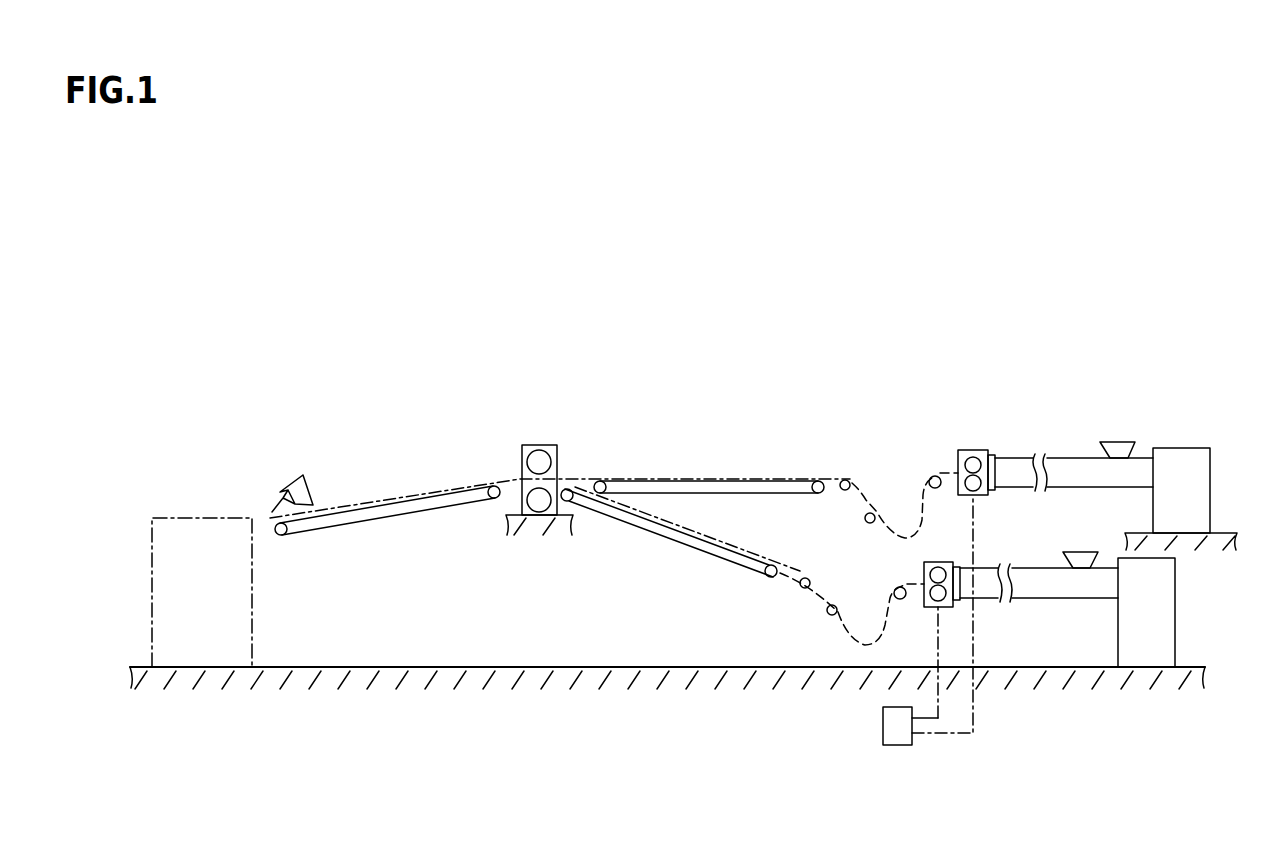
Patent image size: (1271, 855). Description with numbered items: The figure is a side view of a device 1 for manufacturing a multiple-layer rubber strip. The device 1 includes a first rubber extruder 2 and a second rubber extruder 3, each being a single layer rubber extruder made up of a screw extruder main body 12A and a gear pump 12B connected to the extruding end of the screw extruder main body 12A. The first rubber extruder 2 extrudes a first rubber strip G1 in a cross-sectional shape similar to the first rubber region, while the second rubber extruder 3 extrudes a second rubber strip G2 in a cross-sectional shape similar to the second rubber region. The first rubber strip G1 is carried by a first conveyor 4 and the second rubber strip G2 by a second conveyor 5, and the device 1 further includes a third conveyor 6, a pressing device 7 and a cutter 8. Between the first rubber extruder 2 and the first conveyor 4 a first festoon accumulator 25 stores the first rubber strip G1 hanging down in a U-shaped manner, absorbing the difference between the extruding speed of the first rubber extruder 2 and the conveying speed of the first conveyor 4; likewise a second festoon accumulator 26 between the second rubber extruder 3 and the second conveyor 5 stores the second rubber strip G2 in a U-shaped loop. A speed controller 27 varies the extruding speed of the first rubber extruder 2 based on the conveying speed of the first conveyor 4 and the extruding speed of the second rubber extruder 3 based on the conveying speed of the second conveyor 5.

The device for manufacturing a multiple-layer rubber strip 1 is at (801, 387).
The first rubber extruder 2 is at (1086, 610).
The second rubber extruder 3 is at (1117, 370).
The first conveyor 4 is at (685, 547).
The second conveyor 5 is at (667, 493).
The third conveyor 6 is at (377, 517).
The pressing device 7 is at (570, 448).
The cutter 8 is at (324, 457).
The screw extruder main body 12A is at (1073, 458).
The gear pump 12B is at (972, 452).
The first festoon accumulator 25 is at (854, 607).
The second festoon accumulator 26 is at (898, 499).
The speed controller 27 is at (897, 747).
The first rubber strip G1 is at (853, 643).
The second rubber strip G2 is at (858, 484).